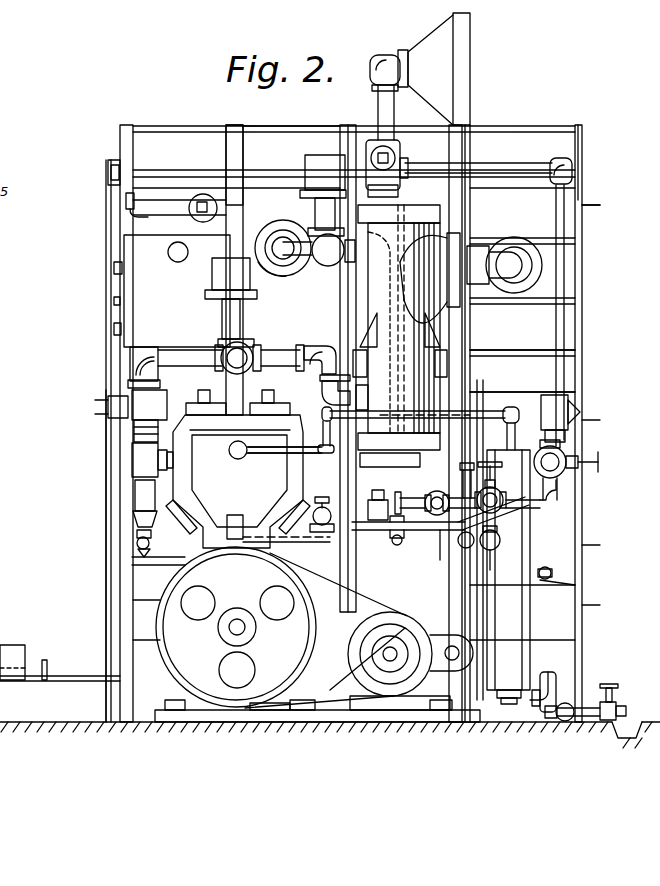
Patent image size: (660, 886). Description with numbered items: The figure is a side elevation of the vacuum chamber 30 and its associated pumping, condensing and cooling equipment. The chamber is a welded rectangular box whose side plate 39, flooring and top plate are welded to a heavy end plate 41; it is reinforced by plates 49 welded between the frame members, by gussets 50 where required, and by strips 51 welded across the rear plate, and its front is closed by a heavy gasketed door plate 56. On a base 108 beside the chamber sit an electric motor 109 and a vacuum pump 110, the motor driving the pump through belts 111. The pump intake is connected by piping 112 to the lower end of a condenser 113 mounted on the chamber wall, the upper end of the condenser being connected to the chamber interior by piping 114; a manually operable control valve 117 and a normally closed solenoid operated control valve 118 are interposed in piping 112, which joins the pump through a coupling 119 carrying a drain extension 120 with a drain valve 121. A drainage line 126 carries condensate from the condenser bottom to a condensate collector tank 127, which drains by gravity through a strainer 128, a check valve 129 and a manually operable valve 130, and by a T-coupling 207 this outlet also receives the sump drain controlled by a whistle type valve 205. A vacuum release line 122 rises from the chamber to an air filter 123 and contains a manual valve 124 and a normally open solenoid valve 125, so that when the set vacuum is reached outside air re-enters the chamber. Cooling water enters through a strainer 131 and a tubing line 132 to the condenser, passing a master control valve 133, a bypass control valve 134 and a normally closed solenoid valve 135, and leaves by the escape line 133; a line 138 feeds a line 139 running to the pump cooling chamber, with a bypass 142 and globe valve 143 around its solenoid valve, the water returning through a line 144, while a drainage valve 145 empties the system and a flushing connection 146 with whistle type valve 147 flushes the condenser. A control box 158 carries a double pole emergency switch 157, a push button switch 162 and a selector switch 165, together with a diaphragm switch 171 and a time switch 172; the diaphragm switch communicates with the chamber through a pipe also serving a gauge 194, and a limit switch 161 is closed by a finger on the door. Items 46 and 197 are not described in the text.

The air filter 123 is at (462, 52).
The vacuum release or intake tubing line 122 is at (372, 94).
The manually operable control valve 124 is at (390, 150).
The escape line for cooling water 133 is at (490, 162).
The end plate 41 is at (584, 148).
The vacuum chamber 30 is at (286, 126).
The frame post 46 is at (240, 166).
The strips 51 is at (601, 194).
The limit switch 161 is at (115, 162).
The diaphragm switch 171 is at (208, 200).
The gauge 194 is at (125, 202).
The control box 158 is at (131, 285).
The time switch 172 is at (176, 262).
The double pole emergency switch 157 is at (113, 268).
The push button switch 162 is at (113, 302).
The selector switch 165 is at (113, 330).
The normally open solenoid operated control valve 125 is at (330, 266).
The condenser 113 is at (377, 300).
The piping 114 is at (470, 250).
The piping 112 is at (134, 362).
The normally closed solenoid operated control valve 118 is at (244, 352).
The drainage line 126 is at (485, 425).
The manually operable control valve 117 is at (140, 405).
The coupling 119 is at (142, 462).
The drain extension 120 is at (140, 495).
The drain valve 121 is at (140, 543).
The door plate 56 is at (104, 546).
The line 144 is at (238, 458).
The vacuum pump 110 is at (218, 542).
The bypass 142 is at (306, 540).
The globe valve 143 is at (328, 498).
The whistle type valve 147 is at (378, 500).
The connection 146 is at (393, 534).
The normally closed solenoid operated control valve 135 is at (430, 516).
The valve 134 is at (504, 498).
The tubing line 132 is at (468, 492).
The line 138 is at (515, 513).
The drainage valve 145 is at (500, 542).
The line 139 is at (448, 548).
The strainer 131 is at (560, 402).
The plates 49 is at (495, 348).
The gussets 50 is at (530, 390).
The base 108 is at (292, 724).
The belts 111 is at (348, 620).
The electric motor 109 is at (398, 680).
The condensate collector tank 127 is at (552, 573).
The side plate 39 is at (555, 584).
The strainer 128 is at (555, 690).
The check valve 129 is at (572, 706).
The manually operable valve 130 is at (620, 712).
The T-coupling 207 is at (592, 730).
The box 197 is at (12, 655).
The whistle type valve 205 is at (50, 666).